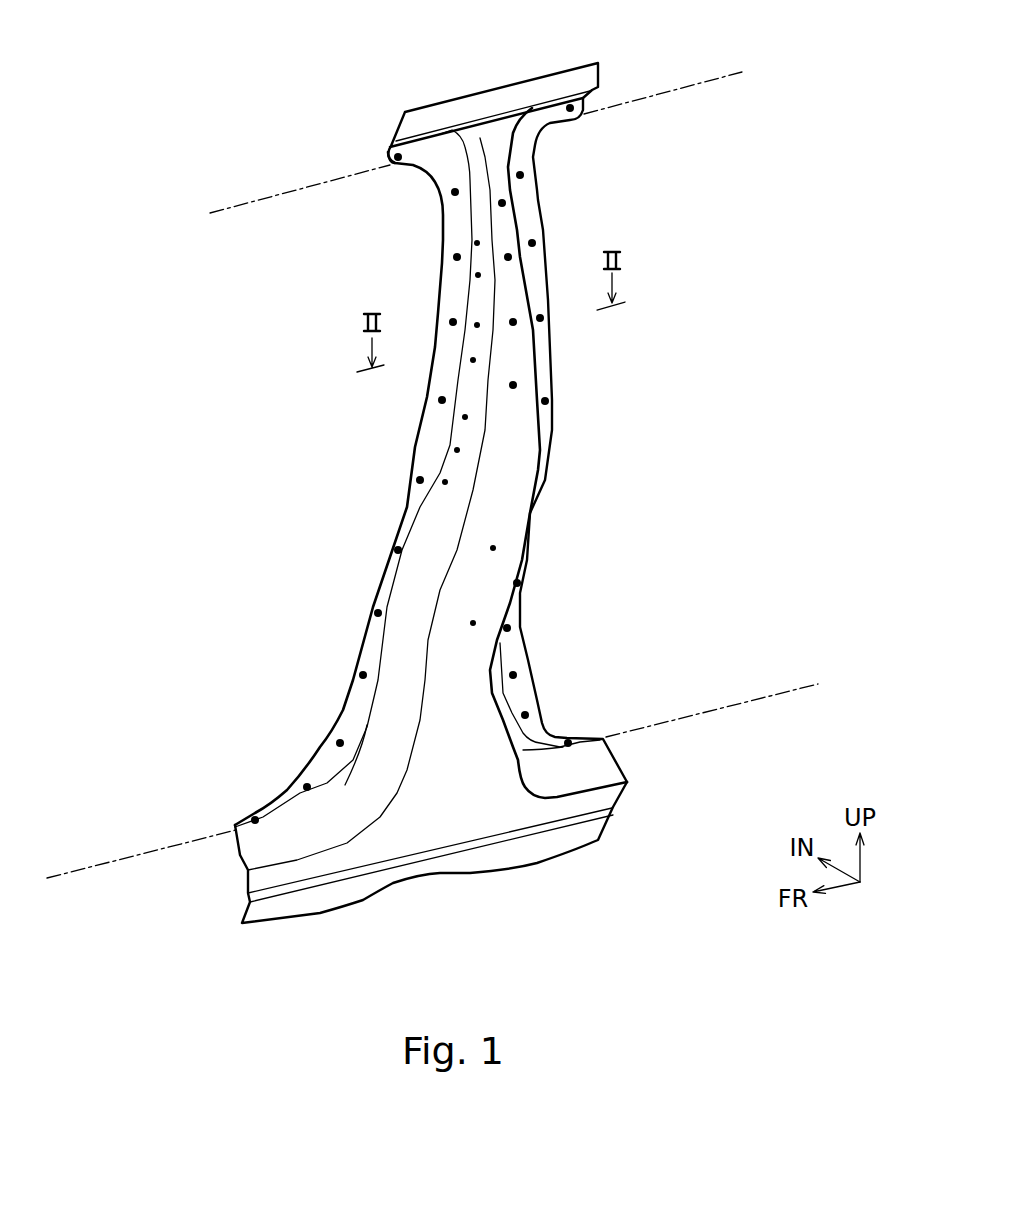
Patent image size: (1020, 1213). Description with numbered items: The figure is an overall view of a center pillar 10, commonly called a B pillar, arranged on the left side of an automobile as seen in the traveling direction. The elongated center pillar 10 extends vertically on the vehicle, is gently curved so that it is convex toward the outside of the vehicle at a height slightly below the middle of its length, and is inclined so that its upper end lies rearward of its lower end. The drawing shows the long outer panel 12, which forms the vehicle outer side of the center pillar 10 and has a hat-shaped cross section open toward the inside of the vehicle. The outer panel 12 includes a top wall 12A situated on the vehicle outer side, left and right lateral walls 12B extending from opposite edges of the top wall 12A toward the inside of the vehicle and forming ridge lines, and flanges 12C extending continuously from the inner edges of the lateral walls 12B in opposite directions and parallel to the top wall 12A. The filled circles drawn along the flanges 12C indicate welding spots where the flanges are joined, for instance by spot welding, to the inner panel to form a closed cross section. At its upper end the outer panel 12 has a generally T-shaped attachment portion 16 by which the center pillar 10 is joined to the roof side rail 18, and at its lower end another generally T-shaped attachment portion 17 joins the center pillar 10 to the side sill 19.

The center pillar 10 is at (769, 363).
The outer panel 12 is at (529, 452).
The top wall 12A is at (500, 522).
The lateral walls 12B is at (393, 693).
The flanges 12C is at (533, 257).
The attachment portion 16 is at (492, 138).
The attachment portion 17 is at (467, 797).
The roof side rail 18 is at (670, 90).
The side sill 19 is at (732, 707).